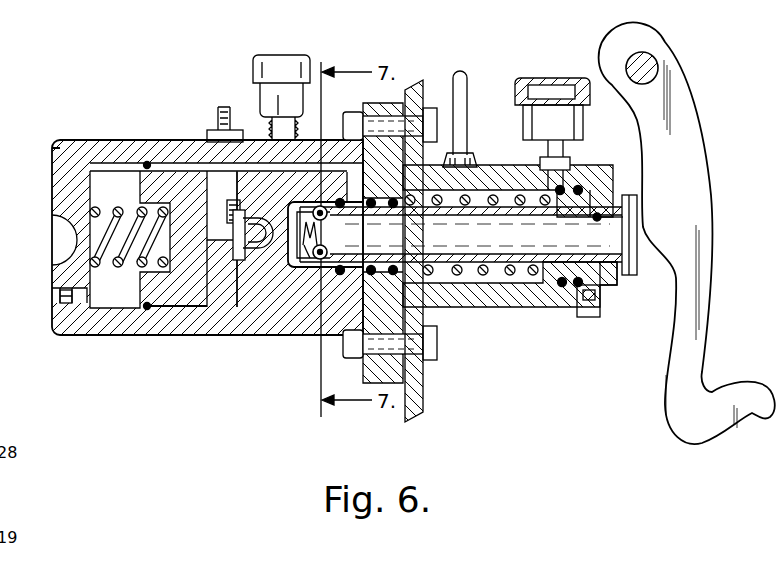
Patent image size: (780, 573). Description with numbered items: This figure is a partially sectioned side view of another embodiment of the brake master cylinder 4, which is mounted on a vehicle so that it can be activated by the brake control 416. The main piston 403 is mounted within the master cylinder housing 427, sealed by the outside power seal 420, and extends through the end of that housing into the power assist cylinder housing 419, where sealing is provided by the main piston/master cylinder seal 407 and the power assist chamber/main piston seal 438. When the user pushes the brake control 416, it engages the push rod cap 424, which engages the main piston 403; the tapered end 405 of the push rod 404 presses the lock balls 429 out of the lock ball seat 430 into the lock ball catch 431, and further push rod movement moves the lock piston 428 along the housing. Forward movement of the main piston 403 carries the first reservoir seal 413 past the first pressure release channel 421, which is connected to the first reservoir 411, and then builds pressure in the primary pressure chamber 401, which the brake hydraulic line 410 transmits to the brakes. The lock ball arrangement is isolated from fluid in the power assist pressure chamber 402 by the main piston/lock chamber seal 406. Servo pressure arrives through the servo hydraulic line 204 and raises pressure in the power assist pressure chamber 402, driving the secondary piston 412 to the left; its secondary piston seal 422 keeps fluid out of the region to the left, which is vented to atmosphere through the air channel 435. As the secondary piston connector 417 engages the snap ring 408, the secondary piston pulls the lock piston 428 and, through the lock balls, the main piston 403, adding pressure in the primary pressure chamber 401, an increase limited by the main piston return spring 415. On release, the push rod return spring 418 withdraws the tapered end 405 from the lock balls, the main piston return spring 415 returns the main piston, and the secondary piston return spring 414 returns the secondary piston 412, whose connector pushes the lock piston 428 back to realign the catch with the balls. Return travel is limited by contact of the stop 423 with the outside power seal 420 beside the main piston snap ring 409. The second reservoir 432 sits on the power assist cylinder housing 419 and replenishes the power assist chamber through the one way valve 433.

The brake master cylinder 4 is at (498, 380).
The servo hydraulic line 204 is at (218, 112).
The primary pressure chamber 401 is at (483, 192).
The power assist pressure chamber 402 is at (273, 307).
The main piston 403 is at (610, 300).
The push rod 404 is at (598, 216).
The tapered end 405 is at (336, 230).
The main piston/lock chamber seal 406 is at (318, 195).
The main piston/master cylinder seal 407 is at (392, 200).
The snap ring 408 is at (235, 212).
The main piston snap ring 409 is at (607, 290).
The brake hydraulic line 410 is at (467, 82).
The first reservoir 411 is at (583, 132).
The secondary piston 412 is at (148, 163).
The first reservoir seal 413 is at (562, 287).
The secondary piston return spring 414 is at (124, 253).
The main piston return spring 415 is at (483, 275).
The brake control 416 is at (673, 410).
The secondary piston connector 417 is at (212, 305).
The push rod return spring 418 is at (290, 225).
The power assist cylinder housing 419 is at (95, 145).
The outside power seal 420 is at (578, 287).
The first pressure release channel 421 is at (548, 185).
The secondary piston seal 422 is at (147, 308).
The stop 423 is at (600, 177).
The push rod cap 424 is at (633, 276).
The master cylinder housing 427 is at (420, 295).
The lock piston 428 is at (247, 310).
The lock balls 429 is at (313, 260).
The lock ball seat 430 is at (265, 308).
The lock ball catch 431 is at (323, 260).
The second reservoir 432 is at (258, 62).
The one way valve 433 is at (280, 135).
The air channel 435 is at (87, 303).
The power assist chamber/main piston seal 438 is at (418, 372).